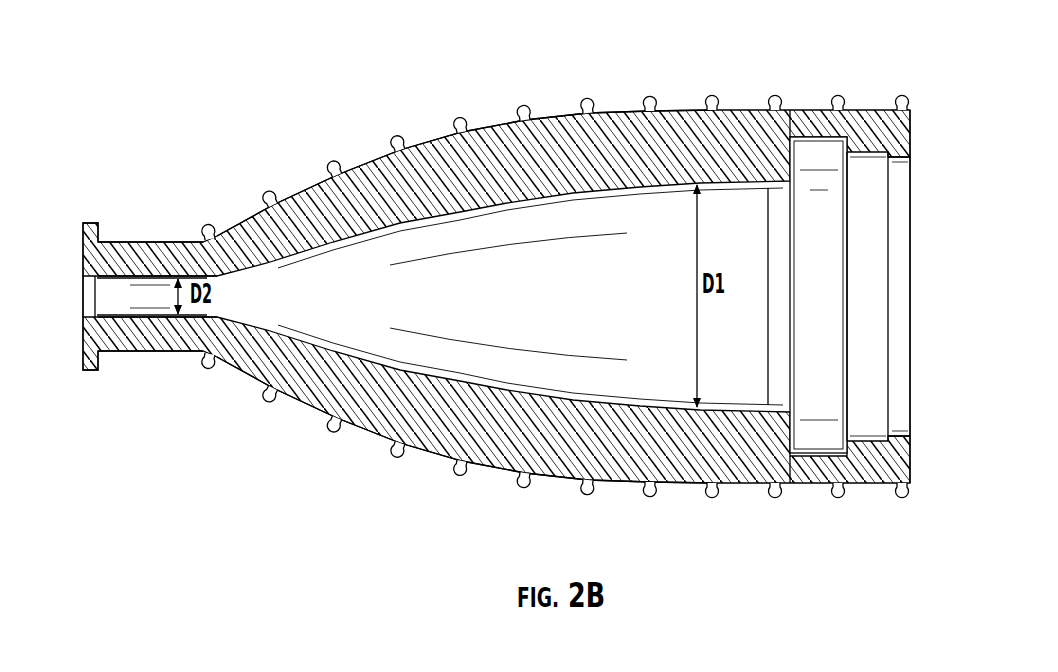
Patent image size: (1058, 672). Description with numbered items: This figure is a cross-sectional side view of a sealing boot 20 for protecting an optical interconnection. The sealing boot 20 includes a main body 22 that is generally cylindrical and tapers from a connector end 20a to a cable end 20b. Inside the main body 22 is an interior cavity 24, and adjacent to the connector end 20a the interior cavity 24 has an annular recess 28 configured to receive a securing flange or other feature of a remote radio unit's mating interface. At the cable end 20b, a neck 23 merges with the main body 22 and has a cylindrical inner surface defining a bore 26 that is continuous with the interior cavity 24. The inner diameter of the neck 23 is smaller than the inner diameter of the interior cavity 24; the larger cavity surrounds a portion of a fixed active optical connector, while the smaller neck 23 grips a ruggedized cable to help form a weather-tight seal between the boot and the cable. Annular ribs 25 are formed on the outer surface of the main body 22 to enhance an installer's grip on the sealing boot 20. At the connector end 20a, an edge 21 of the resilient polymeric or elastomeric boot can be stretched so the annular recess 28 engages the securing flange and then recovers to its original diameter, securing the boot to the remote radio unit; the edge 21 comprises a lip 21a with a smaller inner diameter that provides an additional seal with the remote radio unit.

The sealing boot 20 is at (245, 120).
The connector end 20a is at (917, 283).
The cable end 20b is at (72, 282).
The edge 21 is at (892, 470).
The lip 21a is at (907, 148).
The main body 22 is at (447, 418).
The neck 23 is at (147, 252).
The interior cavity 24 is at (592, 275).
The annular ribs 25 is at (772, 495).
The bore 26 is at (110, 308).
The annular recess 28 is at (818, 145).